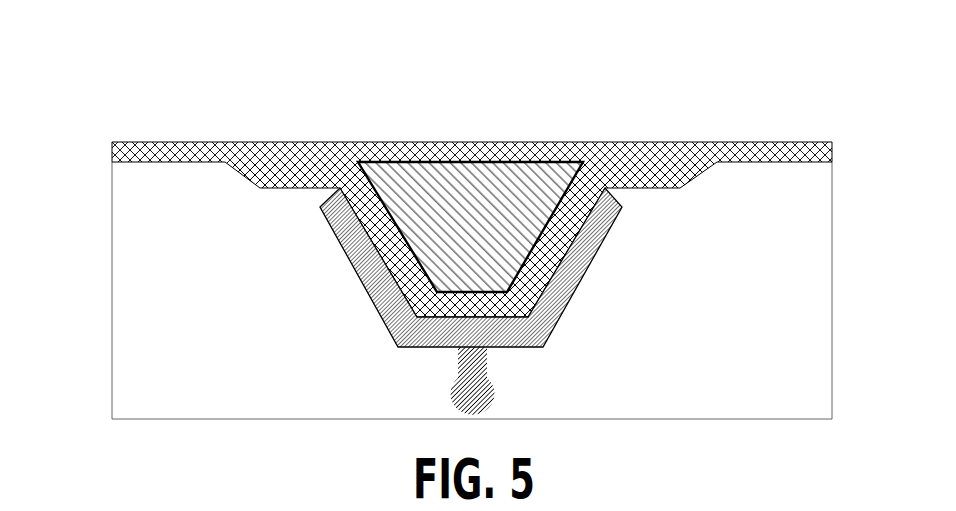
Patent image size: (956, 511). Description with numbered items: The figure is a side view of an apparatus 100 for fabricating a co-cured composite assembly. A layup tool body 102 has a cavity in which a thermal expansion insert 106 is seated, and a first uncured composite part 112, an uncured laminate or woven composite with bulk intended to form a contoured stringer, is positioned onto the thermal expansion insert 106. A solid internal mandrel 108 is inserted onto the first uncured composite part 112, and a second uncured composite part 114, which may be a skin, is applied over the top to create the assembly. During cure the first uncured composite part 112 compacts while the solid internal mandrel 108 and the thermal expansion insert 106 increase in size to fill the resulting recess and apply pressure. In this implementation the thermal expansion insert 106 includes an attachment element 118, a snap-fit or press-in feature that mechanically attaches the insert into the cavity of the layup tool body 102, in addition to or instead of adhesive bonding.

The apparatus 100 is at (250, 58).
The layup tool body 102 is at (117, 265).
The thermal expansion insert 106 is at (350, 200).
The solid internal mandrel 108 is at (440, 178).
The first uncured composite part 112 is at (255, 170).
The second uncured composite part 114 is at (168, 150).
The attachment element 118 is at (497, 390).